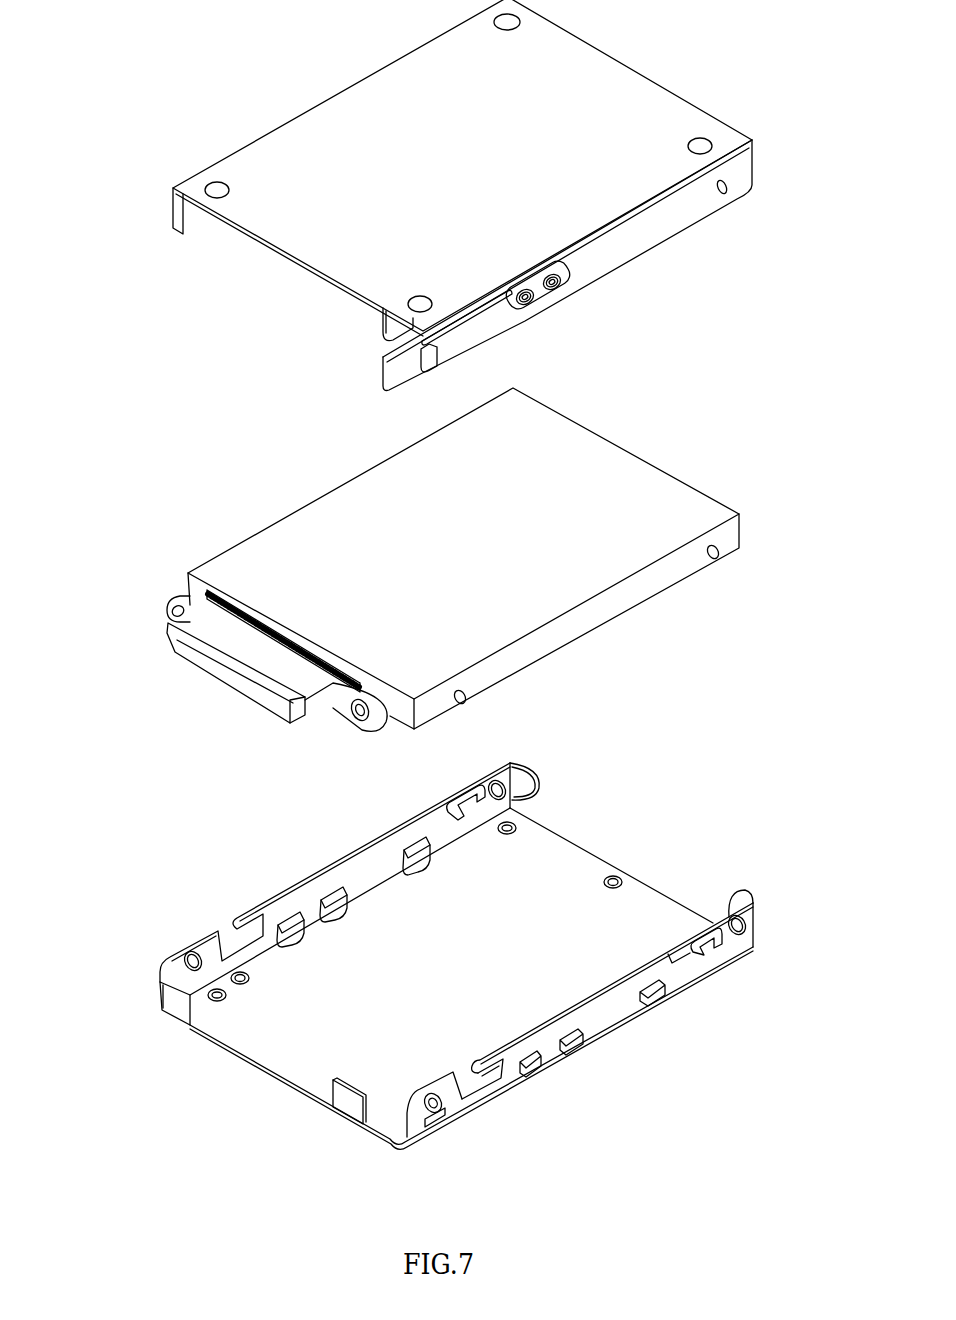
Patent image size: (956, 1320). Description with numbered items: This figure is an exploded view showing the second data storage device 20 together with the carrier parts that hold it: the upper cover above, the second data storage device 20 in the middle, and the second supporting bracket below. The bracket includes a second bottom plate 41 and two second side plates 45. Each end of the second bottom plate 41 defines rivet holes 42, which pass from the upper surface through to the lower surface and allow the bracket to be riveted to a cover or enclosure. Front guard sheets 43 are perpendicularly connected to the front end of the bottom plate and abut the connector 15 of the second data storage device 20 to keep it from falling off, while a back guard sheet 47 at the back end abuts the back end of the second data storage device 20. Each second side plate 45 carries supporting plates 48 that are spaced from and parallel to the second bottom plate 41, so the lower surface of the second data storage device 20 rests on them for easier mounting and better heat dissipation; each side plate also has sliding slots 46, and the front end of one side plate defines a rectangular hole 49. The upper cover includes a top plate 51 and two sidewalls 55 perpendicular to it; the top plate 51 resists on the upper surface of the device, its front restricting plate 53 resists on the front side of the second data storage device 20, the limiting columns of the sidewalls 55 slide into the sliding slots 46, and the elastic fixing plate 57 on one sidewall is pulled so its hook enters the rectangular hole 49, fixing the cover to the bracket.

The connector 15 is at (230, 645).
The second data storage device 20 is at (622, 470).
The second bottom plate 41 is at (258, 1037).
The rivet holes 42 is at (165, 982).
The front guard sheets 43 is at (346, 1105).
The second side plates 45 is at (560, 1035).
The sliding slots 46 is at (487, 1081).
The back guard sheet 47 is at (535, 778).
The supporting plates 48 is at (420, 850).
The rectangular hole 49 is at (432, 1126).
The top plate 51 is at (610, 78).
The restricting plate 53 is at (395, 330).
The sidewalls 55 is at (650, 233).
The fixing plate 57 is at (487, 320).